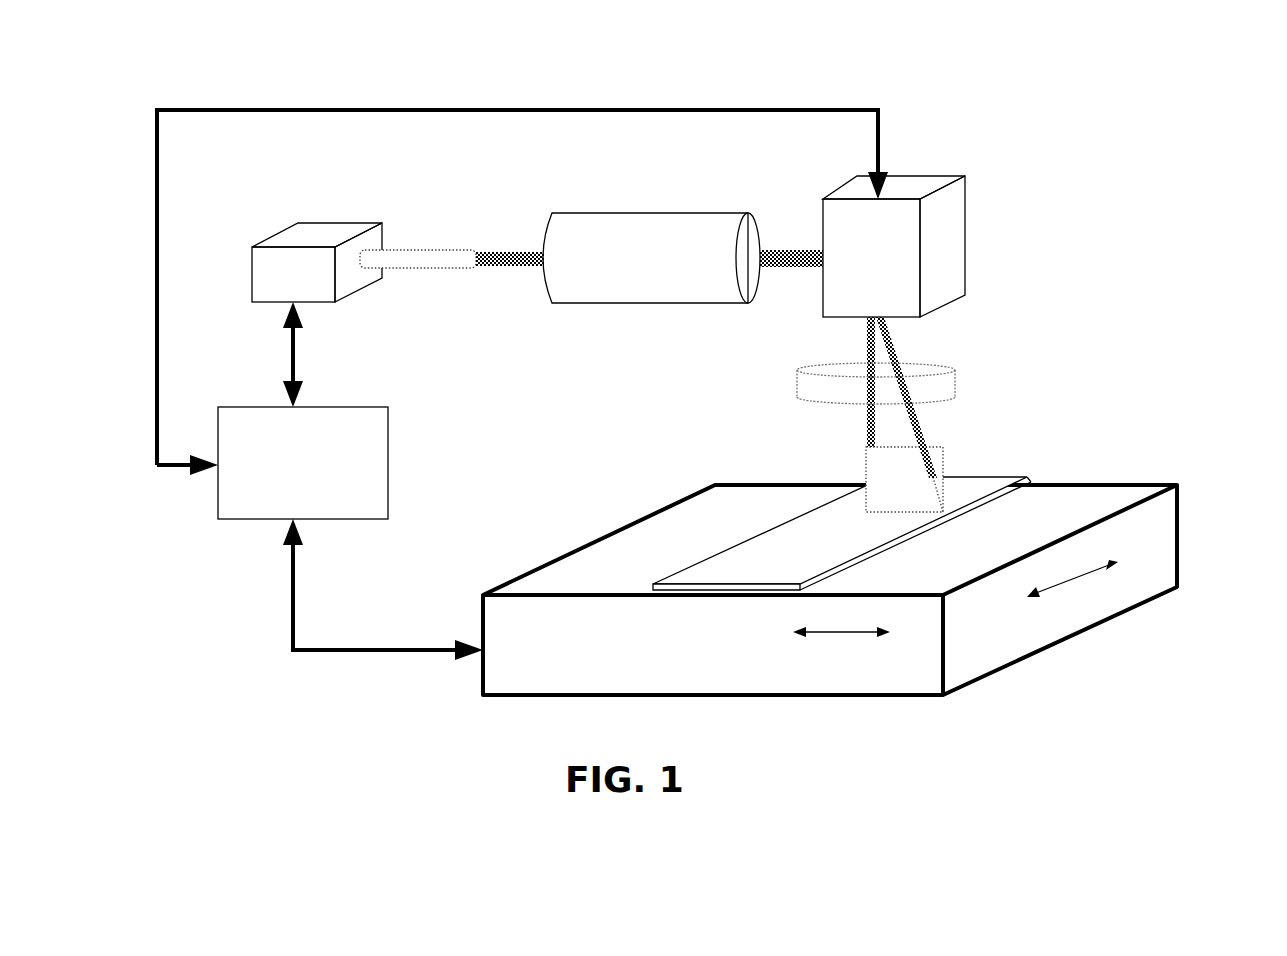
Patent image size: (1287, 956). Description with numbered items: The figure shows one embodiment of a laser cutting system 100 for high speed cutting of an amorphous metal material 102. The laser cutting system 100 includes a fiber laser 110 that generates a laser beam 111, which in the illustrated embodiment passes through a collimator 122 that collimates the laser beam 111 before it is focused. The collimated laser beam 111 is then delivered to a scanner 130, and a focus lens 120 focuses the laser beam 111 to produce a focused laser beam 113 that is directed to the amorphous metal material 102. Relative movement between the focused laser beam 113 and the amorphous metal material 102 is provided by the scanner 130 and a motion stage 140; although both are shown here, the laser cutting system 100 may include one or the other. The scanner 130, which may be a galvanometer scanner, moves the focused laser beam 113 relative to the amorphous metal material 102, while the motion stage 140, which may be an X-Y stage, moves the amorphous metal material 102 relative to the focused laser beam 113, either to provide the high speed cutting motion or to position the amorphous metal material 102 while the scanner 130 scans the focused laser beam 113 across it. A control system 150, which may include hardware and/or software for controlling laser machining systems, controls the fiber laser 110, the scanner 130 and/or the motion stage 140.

The laser cutting system 100 is at (1136, 139).
The fiber laser 110 is at (252, 256).
The laser beam 111 is at (505, 275).
The collimator 122 is at (645, 213).
The scanner 130 is at (823, 207).
The focus lens 120 is at (797, 386).
The focused laser beam 113 is at (867, 446).
The amorphous metal material 102 is at (982, 477).
The motion stage 140 is at (483, 685).
The control system 150 is at (388, 465).